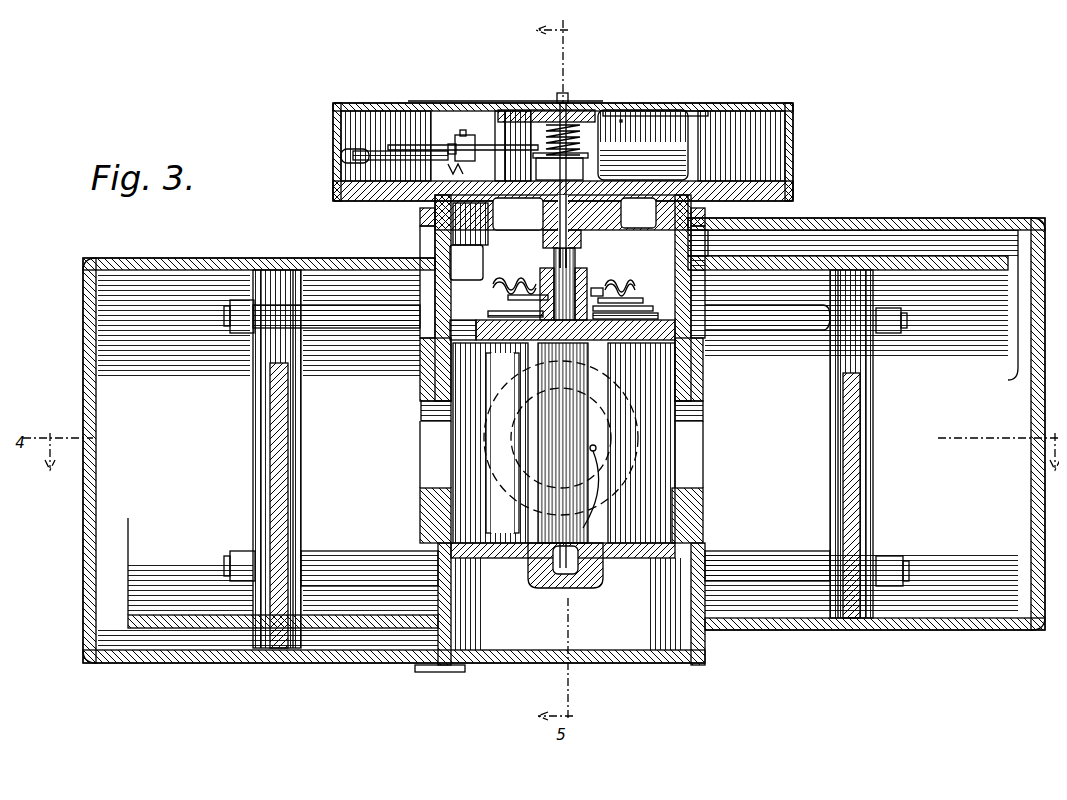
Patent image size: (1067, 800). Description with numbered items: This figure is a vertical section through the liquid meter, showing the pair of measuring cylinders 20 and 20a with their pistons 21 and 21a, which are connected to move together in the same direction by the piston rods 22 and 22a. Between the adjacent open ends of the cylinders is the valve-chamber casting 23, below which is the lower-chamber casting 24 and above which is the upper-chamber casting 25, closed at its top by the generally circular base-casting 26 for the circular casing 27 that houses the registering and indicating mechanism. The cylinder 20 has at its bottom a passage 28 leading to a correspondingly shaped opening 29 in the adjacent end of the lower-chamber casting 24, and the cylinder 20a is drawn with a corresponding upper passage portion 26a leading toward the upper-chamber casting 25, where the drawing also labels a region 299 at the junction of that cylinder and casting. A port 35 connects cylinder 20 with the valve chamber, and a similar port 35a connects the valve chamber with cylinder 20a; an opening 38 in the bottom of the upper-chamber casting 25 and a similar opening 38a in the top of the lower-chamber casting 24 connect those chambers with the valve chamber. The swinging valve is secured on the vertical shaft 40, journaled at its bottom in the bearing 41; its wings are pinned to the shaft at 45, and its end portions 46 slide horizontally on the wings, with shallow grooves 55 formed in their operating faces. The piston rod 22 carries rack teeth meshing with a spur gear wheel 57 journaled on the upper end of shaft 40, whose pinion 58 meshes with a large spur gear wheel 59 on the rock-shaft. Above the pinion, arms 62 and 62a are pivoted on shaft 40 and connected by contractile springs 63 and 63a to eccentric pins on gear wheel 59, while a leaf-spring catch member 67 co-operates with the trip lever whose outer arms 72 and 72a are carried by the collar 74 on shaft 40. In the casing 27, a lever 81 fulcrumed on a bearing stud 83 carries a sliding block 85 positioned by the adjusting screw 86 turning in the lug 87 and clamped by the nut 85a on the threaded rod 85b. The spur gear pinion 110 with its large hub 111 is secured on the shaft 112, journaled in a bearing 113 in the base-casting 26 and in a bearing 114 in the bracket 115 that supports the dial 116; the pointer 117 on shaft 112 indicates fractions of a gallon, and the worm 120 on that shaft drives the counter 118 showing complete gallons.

The measuring cylinder 20 is at (195, 250).
The measuring cylinder 20a is at (985, 212).
The piston 21 is at (250, 428).
The piston 21a is at (866, 440).
The piston rod 22 is at (790, 322).
The piston rod 22a is at (765, 556).
The valve-chamber casting 23 is at (697, 400).
The lower-chamber casting 24 is at (571, 604).
The upper-chamber casting 25 is at (561, 231).
The base-casting 26 is at (412, 210).
The inner plate 26a is at (905, 235).
The casing 27 is at (786, 134).
The passage 28 is at (212, 622).
The opening 29 is at (436, 624).
The junction 299 is at (700, 226).
The port 35 is at (478, 428).
The port 35a is at (690, 460).
The opening 38 is at (413, 365).
The opening 38a is at (697, 500).
The vertical shaft 40 is at (562, 330).
The bearing 41 is at (572, 552).
The pin 45 is at (558, 566).
The end portion 46 is at (528, 548).
The shallow groove 55 is at (508, 428).
The spur gear wheel 57 is at (501, 307).
The spur gear pinion 58 is at (629, 309).
The spur gear wheel 59 is at (469, 241).
The arm 62 is at (513, 274).
The arm 62a is at (638, 297).
The contractile spring 63 is at (553, 284).
The contractile spring 63a is at (623, 272).
The leaf-spring catch member 67 is at (604, 277).
The outer arm 72 is at (528, 277).
The outer arm 72a is at (633, 286).
The collar 74 is at (590, 282).
The lever 81 is at (490, 120).
The bearing stud 83 is at (456, 161).
The block 85 is at (458, 128).
The nut 85a is at (446, 140).
The threaded rod 85b is at (450, 124).
The adjusting screw 86 is at (372, 140).
The lug 87 is at (338, 150).
The spur gear pinion 110 is at (640, 118).
The hub 111 is at (580, 147).
The shaft 112 is at (570, 122).
The bearing 113 is at (575, 163).
The bearing 114 is at (556, 92).
The bracket 115 is at (520, 102).
The dial 116 is at (418, 97).
The pointer 117 is at (470, 103).
The counter 118 is at (638, 130).
The worm 120 is at (600, 106).